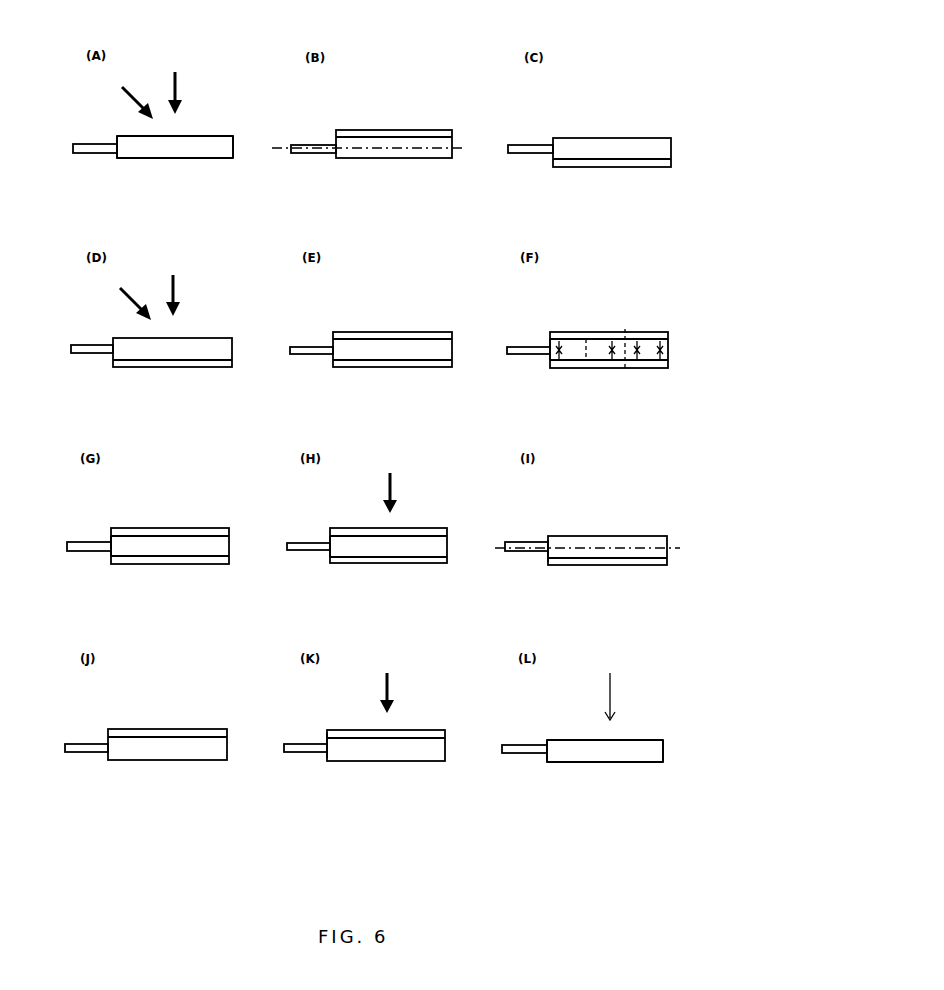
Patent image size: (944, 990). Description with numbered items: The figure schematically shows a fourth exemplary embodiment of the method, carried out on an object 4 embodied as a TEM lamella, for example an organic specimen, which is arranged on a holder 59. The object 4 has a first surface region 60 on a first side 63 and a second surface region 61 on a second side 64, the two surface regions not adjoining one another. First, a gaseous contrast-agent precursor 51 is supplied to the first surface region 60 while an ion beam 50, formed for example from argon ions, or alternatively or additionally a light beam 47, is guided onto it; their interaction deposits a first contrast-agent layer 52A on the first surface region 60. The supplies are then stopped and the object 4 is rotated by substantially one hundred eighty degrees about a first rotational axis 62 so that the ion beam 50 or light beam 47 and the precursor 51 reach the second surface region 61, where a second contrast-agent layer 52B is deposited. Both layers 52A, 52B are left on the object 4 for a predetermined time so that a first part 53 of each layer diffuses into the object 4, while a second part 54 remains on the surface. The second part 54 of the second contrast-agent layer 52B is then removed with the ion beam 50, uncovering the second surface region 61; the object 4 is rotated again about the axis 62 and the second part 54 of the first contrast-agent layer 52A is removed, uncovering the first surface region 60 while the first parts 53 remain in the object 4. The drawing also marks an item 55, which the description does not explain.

The object 4 is at (222, 158).
The light beam 47 is at (224, 149).
The ion beam 50 is at (170, 78).
The gaseous contrast-agent precursor 51 is at (122, 90).
The first contrast-agent layer 52A is at (380, 130).
The second contrast-agent layer 52B is at (386, 335).
The first part 53 is at (550, 340).
The second part 54 is at (572, 335).
The light 55 is at (624, 694).
The holder 59 is at (87, 153).
The first surface region 60 is at (193, 136).
The second surface region 61 is at (175, 158).
The first rotational axis 62 is at (482, 130).
The first side 63 is at (120, 133).
The second side 64 is at (127, 158).